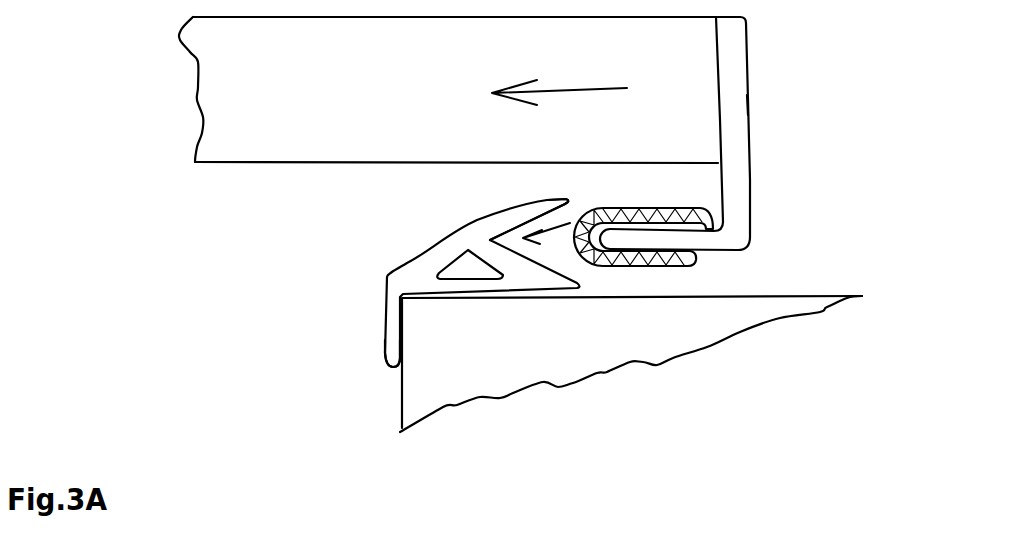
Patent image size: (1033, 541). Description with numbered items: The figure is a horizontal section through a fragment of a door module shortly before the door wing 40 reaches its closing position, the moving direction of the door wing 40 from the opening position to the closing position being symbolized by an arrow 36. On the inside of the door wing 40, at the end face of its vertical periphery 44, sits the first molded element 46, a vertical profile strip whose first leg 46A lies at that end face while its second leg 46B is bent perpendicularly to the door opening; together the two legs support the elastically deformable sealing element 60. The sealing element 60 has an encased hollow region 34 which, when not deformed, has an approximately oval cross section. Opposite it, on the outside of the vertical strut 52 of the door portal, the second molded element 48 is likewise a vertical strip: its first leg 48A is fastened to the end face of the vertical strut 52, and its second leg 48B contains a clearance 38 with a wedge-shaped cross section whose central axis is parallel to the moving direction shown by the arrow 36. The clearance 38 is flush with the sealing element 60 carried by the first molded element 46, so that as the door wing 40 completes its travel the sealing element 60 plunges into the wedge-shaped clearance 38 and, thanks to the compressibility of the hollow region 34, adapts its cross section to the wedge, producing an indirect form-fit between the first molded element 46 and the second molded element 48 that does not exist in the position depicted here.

The hollow region 34 is at (632, 207).
The arrow 36 is at (574, 80).
The clearance 38 is at (575, 218).
The door wing 40 is at (265, 147).
The vertical periphery 44 is at (688, 80).
The first molded element 46 is at (743, 168).
The first leg 46A is at (740, 108).
The second leg 46B is at (693, 247).
The second molded element 48 is at (427, 255).
The first leg 48A is at (393, 345).
The second leg 48B is at (458, 237).
The vertical strut 52 is at (715, 330).
The elastically deformable sealing element 60 is at (628, 215).